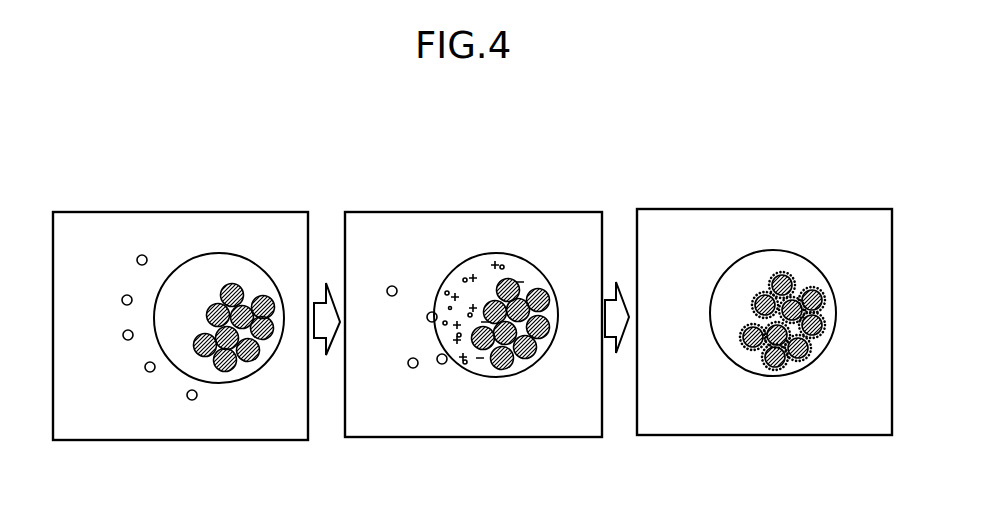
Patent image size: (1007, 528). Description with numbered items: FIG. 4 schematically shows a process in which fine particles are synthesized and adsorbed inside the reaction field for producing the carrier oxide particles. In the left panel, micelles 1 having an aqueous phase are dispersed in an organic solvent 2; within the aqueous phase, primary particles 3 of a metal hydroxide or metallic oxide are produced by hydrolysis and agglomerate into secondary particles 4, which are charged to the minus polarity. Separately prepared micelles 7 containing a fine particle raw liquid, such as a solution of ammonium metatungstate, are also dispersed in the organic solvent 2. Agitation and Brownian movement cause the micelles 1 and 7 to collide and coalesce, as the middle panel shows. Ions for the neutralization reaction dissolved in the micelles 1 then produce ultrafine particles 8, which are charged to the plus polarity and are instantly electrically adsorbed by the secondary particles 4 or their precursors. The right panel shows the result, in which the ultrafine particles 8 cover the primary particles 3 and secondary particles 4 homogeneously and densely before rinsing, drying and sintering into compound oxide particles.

The micelles 1 is at (218, 260).
The organic solvent 2 is at (155, 220).
The primary particles 3 is at (268, 297).
The secondary particles 4 is at (241, 372).
The micelles containing fine particle raw liquid 7 is at (150, 372).
The ultrafine particles 8 is at (447, 290).